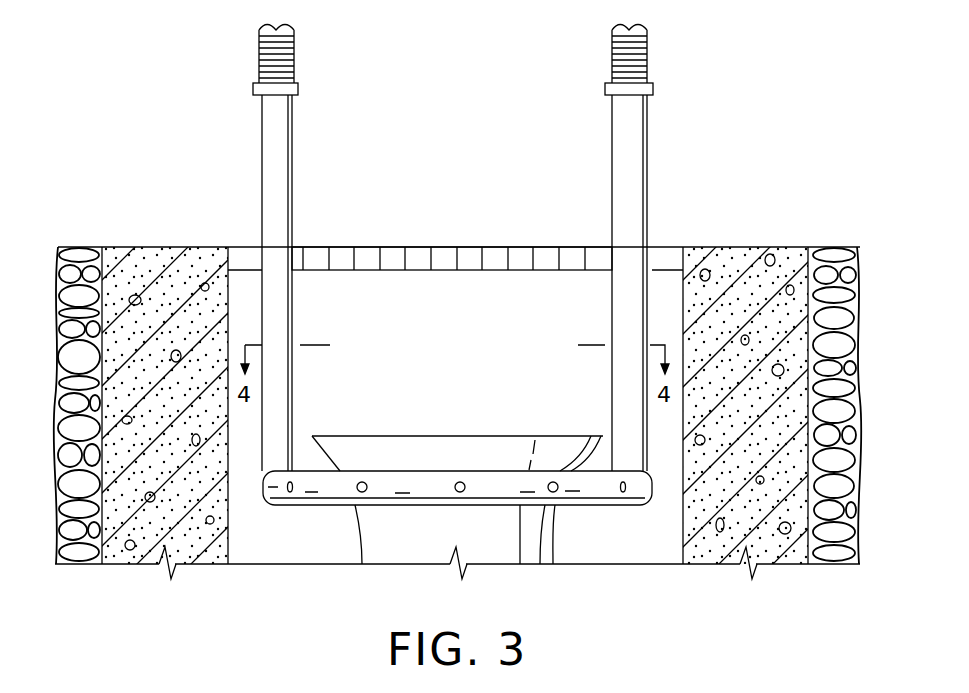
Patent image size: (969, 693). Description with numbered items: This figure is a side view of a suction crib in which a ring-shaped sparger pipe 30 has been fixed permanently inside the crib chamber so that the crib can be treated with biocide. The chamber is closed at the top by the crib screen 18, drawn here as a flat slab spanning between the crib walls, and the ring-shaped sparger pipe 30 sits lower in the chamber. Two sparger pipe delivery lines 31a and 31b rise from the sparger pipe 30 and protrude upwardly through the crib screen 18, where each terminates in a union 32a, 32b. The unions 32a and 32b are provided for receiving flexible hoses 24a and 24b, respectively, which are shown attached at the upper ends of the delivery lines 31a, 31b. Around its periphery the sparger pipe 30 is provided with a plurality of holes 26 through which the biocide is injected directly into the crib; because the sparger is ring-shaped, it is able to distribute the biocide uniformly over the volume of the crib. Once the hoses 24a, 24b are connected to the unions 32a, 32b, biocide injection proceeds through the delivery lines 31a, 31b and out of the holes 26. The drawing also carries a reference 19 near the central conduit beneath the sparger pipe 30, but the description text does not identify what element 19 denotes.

The top screen 18 is at (442, 246).
The conduit 19 is at (510, 435).
The flexible hose 24a is at (265, 57).
The flexible hose 24b is at (648, 57).
The holes 26 is at (457, 483).
The ring-shaped sparger pipe 30 is at (483, 485).
The sparger pipe delivery line 31a is at (262, 184).
The sparger pipe delivery line 31b is at (648, 183).
The union 32a is at (257, 93).
The union 32b is at (652, 93).